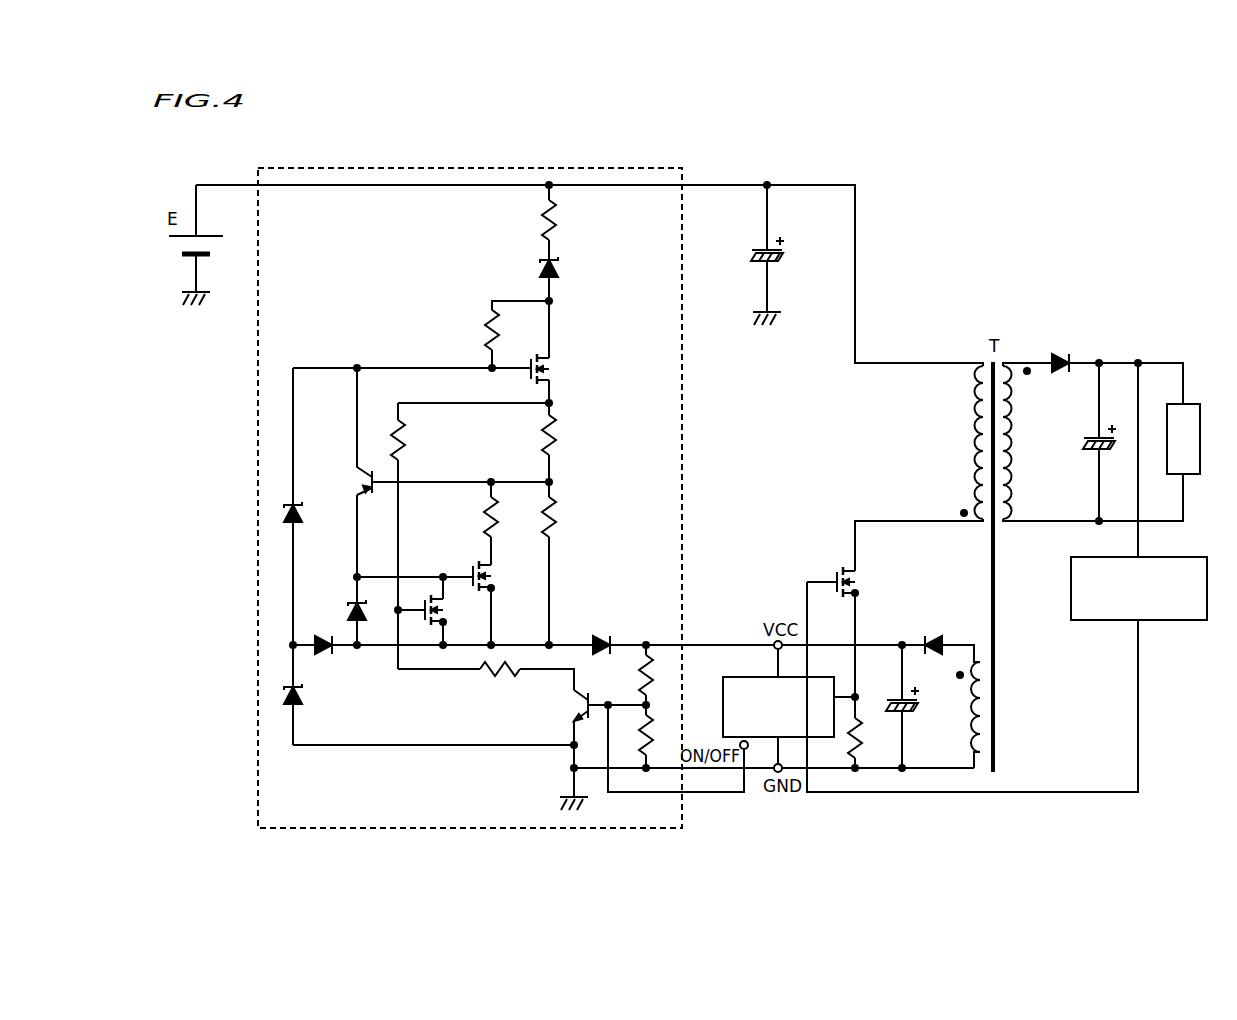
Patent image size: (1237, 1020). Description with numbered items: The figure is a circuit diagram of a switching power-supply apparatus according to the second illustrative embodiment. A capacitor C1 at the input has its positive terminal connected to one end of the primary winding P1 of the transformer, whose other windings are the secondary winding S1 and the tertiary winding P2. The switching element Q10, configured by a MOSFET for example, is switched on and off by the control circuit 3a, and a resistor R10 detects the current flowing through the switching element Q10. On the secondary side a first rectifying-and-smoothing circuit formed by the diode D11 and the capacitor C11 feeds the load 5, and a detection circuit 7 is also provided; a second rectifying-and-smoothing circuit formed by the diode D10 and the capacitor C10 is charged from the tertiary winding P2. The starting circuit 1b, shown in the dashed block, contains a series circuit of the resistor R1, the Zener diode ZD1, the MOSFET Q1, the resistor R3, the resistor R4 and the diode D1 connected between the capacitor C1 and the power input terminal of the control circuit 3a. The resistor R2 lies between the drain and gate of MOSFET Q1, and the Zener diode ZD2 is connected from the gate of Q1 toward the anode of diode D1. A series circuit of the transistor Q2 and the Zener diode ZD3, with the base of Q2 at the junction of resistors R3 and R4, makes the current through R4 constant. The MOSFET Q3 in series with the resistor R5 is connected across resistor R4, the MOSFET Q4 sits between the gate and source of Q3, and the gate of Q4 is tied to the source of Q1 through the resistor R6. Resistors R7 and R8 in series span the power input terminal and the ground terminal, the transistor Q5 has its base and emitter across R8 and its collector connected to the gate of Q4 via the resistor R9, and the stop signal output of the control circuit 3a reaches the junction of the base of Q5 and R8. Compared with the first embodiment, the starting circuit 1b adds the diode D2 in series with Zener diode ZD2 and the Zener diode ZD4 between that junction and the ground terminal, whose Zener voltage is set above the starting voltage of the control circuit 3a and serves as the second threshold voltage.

The starting circuit 1b is at (594, 169).
The control circuit 3a is at (748, 677).
The load 5 is at (1202, 432).
The detection circuit 7 is at (1071, 575).
The resistor R1 is at (562, 222).
The resistor R2 is at (517, 334).
The resistor R3 is at (562, 442).
The resistor R4 is at (562, 563).
The resistor R5 is at (505, 523).
The resistor R6 is at (413, 536).
The resistor R7 is at (658, 675).
The resistor R8 is at (658, 736).
The resistor R9 is at (486, 680).
The resistor R10 is at (873, 743).
The Zener diode ZD1 is at (571, 279).
The Zener diode ZD2 is at (281, 506).
The Zener diode ZD3 is at (343, 611).
The Zener diode ZD4 is at (281, 695).
The diode D1 is at (605, 635).
The diode D2 is at (327, 635).
The diode D10 is at (939, 635).
The diode D11 is at (1067, 352).
The MOSFET Q1 is at (556, 352).
The transistor Q2 is at (354, 472).
The MOSFET Q3 is at (497, 603).
The MOSFET Q4 is at (449, 611).
The transistor Q5 is at (570, 750).
The switching element Q10 is at (869, 619).
The capacitor C1 is at (765, 255).
The capacitor C10 is at (893, 706).
The capacitor C11 is at (1091, 442).
The primary winding P1 is at (964, 442).
The tertiary winding P2 is at (963, 707).
The secondary winding S1 is at (1029, 442).